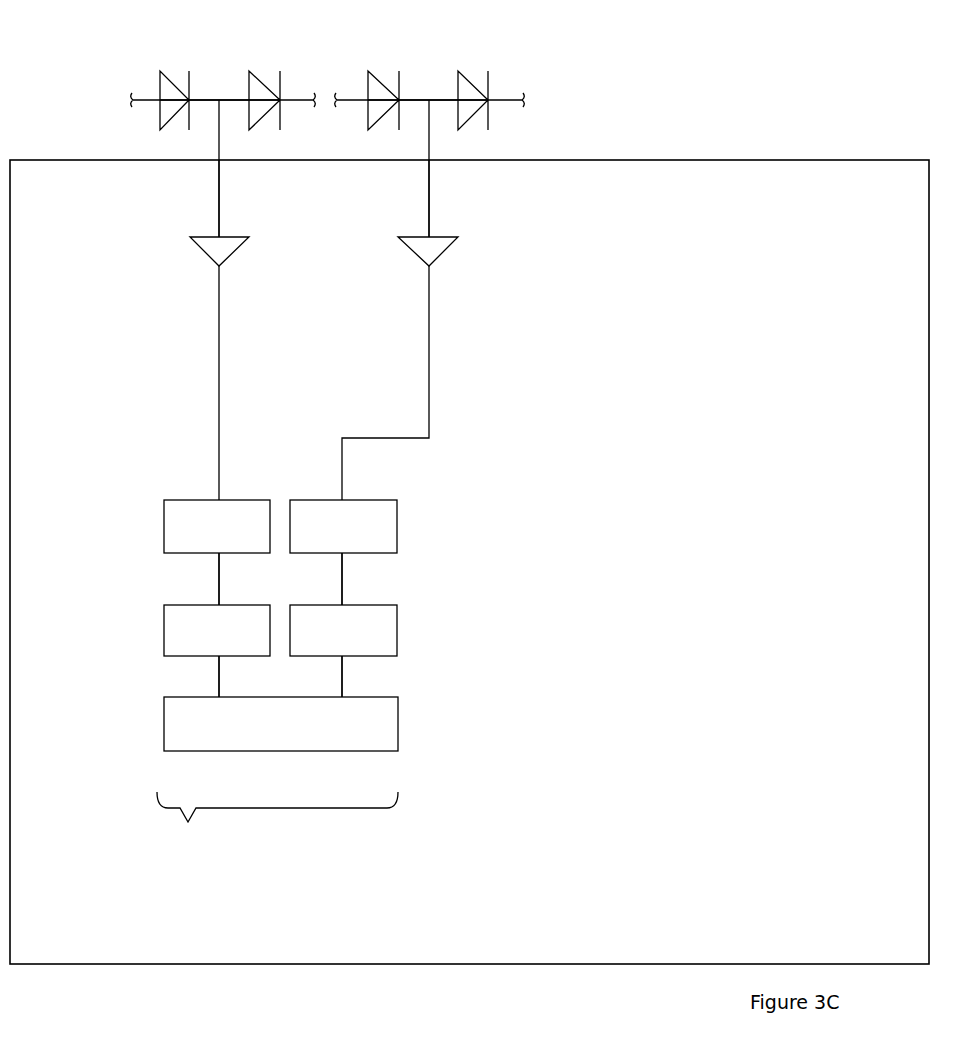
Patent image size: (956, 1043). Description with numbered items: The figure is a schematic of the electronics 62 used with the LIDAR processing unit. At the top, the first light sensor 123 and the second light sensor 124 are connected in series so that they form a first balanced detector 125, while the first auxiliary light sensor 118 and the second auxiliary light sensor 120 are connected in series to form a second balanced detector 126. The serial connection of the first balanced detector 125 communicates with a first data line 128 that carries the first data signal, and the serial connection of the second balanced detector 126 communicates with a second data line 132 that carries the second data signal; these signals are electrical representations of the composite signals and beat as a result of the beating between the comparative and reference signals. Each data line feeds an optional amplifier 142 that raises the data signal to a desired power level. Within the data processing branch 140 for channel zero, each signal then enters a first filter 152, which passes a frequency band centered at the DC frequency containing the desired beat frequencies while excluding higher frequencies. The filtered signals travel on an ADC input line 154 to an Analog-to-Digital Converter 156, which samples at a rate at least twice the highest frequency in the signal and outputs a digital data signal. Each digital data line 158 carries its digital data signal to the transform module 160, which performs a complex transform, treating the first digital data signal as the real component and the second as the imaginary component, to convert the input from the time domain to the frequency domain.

The electronics 62 is at (648, 170).
The first auxiliary light sensor 118 is at (368, 71).
The second auxiliary light sensor 120 is at (458, 71).
The first light sensor 123 is at (160, 71).
The second light sensor 124 is at (249, 71).
The first balanced detector 125 is at (210, 45).
The second balanced detector 126 is at (428, 55).
The first data line 128 is at (219, 193).
The second data line 132 is at (429, 192).
The amplifier 142 is at (233, 240).
The first filter 152 is at (190, 500).
The ADC input line 154 is at (222, 583).
The Analog-to-Digital Converter 156 is at (194, 603).
The digital data line 158 is at (222, 672).
The transform module 160 is at (176, 752).
The data processing branch 140 is at (277, 844).